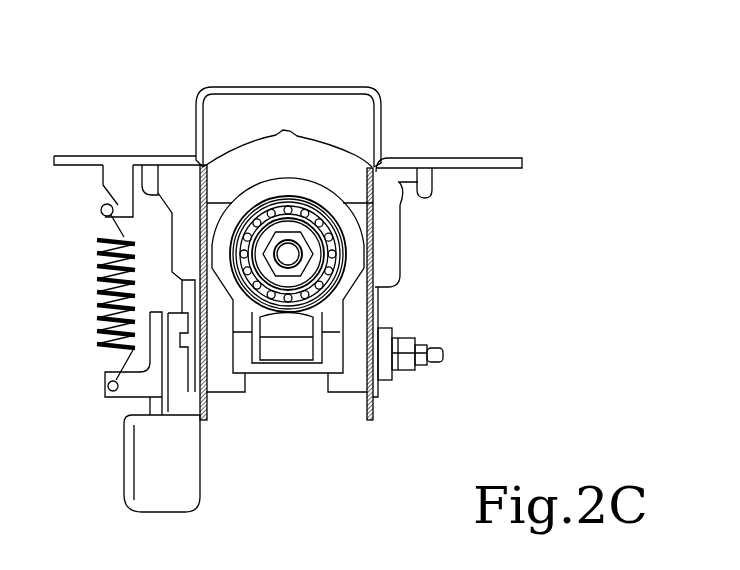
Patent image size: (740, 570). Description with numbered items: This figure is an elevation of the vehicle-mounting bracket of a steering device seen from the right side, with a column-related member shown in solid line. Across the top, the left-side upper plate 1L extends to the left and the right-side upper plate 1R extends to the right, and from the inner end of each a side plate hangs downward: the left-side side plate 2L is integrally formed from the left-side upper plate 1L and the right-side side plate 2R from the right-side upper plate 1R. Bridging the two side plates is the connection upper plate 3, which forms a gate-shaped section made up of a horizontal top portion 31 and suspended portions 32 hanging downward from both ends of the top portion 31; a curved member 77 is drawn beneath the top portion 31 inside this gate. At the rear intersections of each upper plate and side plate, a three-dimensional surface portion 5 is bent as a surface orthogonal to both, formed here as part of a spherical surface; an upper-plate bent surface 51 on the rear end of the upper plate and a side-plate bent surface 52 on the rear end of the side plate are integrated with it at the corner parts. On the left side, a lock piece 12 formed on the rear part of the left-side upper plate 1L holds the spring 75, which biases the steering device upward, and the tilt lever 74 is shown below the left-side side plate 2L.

The left-side upper plate 1L is at (77, 155).
The right-side upper plate 1R is at (498, 157).
The left-side side plate 2L is at (207, 414).
The right-side side plate 2R is at (381, 408).
The connection upper plate 3 is at (327, 86).
The top portion 31 is at (258, 87).
The suspended portions 32 is at (193, 127).
The curved plate 77 is at (243, 158).
The three-dimensional surface portion 5 is at (166, 224).
The upper-plate bent surface 51 is at (435, 185).
The side-plate bent surface 52 is at (402, 272).
The lock piece 12 is at (100, 185).
The spring 75 is at (97, 287).
The tilt lever 74 is at (123, 455).